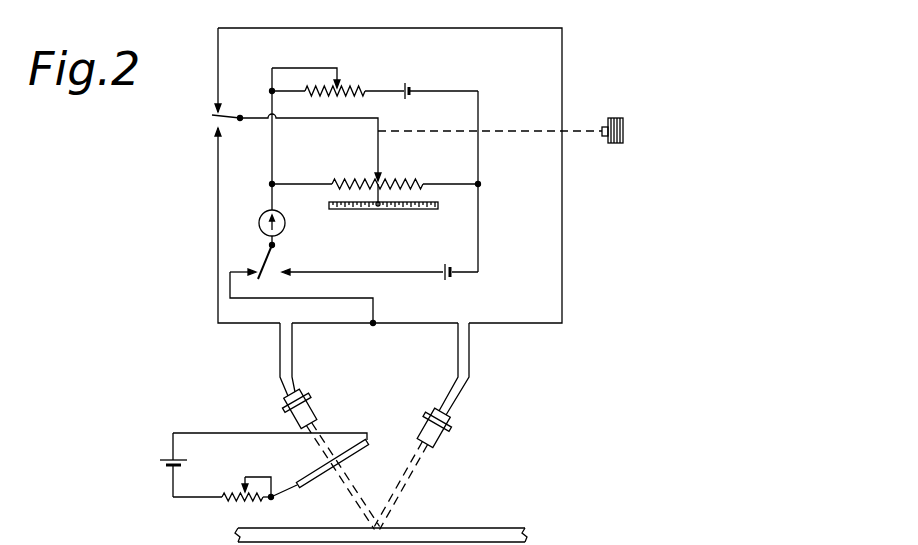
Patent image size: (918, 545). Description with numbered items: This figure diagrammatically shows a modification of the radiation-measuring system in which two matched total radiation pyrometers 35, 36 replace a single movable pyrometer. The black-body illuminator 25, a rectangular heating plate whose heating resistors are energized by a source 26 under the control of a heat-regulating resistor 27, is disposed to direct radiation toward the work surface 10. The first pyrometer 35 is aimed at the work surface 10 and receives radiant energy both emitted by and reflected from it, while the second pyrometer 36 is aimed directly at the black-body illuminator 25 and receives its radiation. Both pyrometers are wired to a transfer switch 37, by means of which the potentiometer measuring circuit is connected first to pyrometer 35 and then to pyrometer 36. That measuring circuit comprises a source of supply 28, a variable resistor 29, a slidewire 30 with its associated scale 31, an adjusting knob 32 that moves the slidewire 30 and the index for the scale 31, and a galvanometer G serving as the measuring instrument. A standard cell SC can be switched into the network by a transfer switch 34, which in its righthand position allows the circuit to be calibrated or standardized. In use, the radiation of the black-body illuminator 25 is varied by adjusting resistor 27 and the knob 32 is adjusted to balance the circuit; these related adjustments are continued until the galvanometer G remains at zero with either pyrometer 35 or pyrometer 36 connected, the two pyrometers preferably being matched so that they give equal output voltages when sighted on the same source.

The work surface 10 is at (463, 527).
The black-body illuminator 25 is at (312, 471).
The source 26 is at (158, 462).
The resistor 27 is at (236, 501).
The source of supply 28 is at (412, 88).
The variable resistor 29 is at (351, 88).
The slidewire 30 is at (394, 180).
The scale 31 is at (431, 210).
The adjusting knob 32 is at (616, 144).
The transfer switch 34 is at (258, 263).
The total radiation pyrometer 35 is at (438, 447).
The total radiation pyrometer 36 is at (285, 406).
The transfer switch 37 is at (226, 108).
The galvanometer G is at (285, 227).
The standard cell SC is at (448, 281).